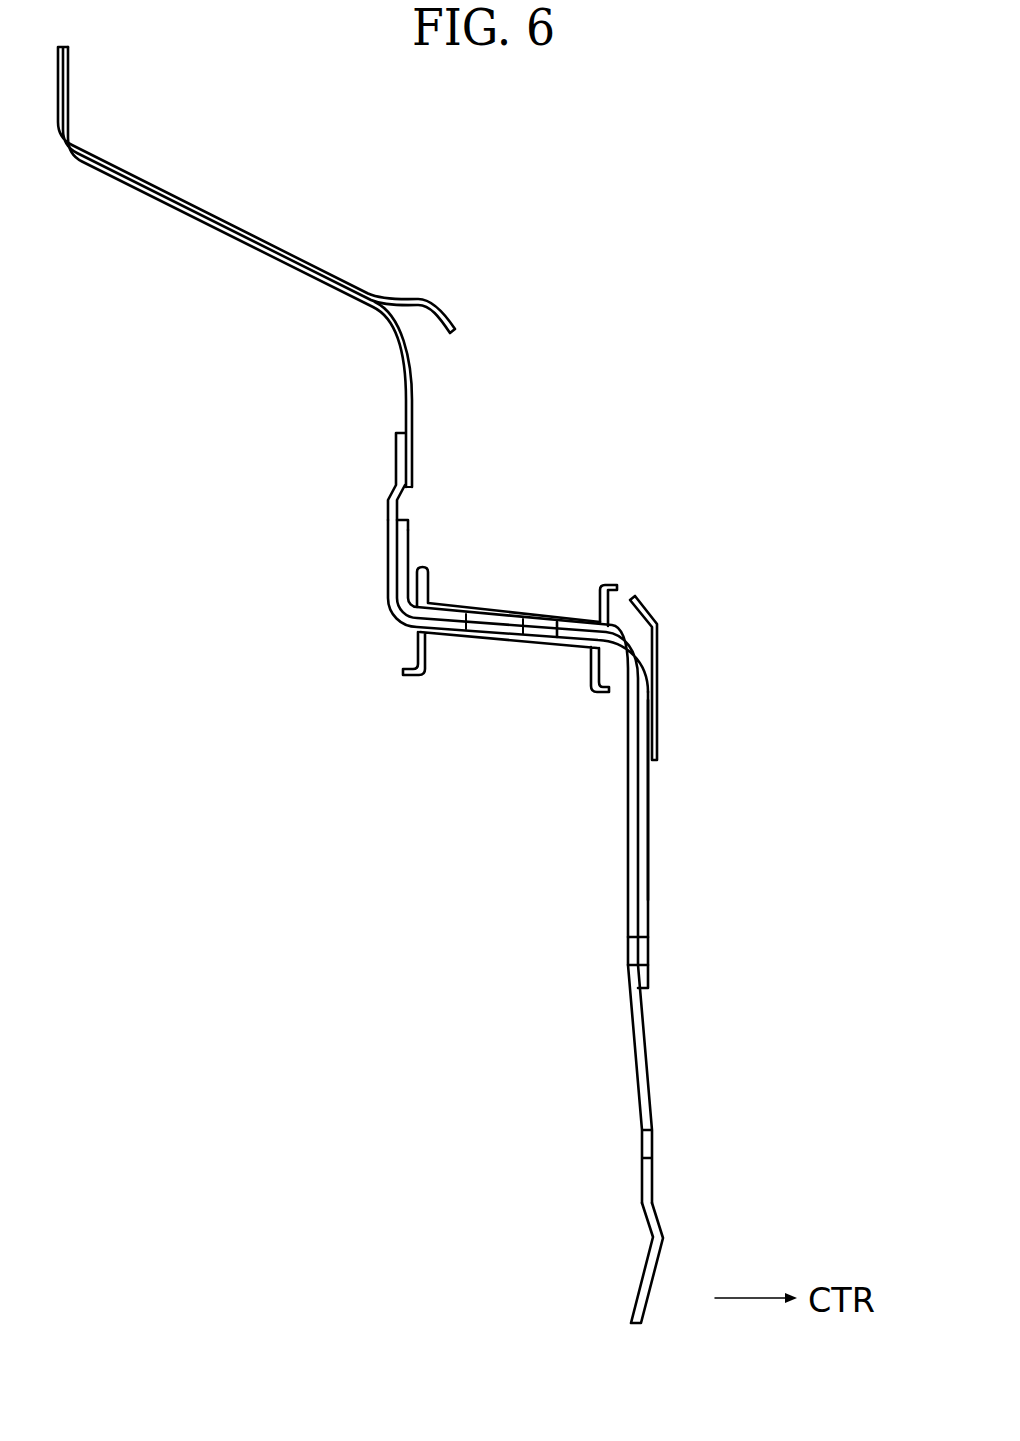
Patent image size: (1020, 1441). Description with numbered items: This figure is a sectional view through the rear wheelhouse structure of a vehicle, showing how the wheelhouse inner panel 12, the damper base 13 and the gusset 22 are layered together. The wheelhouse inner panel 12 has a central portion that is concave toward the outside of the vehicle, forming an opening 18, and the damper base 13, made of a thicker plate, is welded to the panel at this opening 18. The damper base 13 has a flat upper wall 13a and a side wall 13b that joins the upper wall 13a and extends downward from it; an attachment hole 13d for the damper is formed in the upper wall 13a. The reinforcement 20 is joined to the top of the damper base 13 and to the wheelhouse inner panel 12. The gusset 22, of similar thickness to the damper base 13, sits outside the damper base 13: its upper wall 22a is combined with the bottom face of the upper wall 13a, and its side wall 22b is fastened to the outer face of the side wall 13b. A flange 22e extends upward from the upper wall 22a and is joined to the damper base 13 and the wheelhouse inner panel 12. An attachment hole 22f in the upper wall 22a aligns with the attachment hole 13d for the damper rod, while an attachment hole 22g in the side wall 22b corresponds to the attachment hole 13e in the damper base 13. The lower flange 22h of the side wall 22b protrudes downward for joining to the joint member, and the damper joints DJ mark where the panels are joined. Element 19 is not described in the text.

The wheelhouse inner panel 12 is at (385, 323).
The damper base 13 is at (650, 791).
The upper wall 13a is at (558, 623).
The side wall 13b is at (649, 836).
The attachment hole 13d is at (488, 609).
The attachment hole 13e is at (650, 953).
The opening 18 is at (412, 487).
The side outer panel 19 is at (637, 596).
The reinforcement 20 is at (403, 298).
The gusset 22 is at (628, 790).
The upper wall 22a is at (523, 614).
The side wall 22b is at (649, 1032).
The flange 22e is at (395, 456).
The attachment hole 22f is at (470, 631).
The attachment hole 22g is at (627, 952).
The lower flange 22h is at (649, 1290).
The damper joint DJ is at (417, 586).